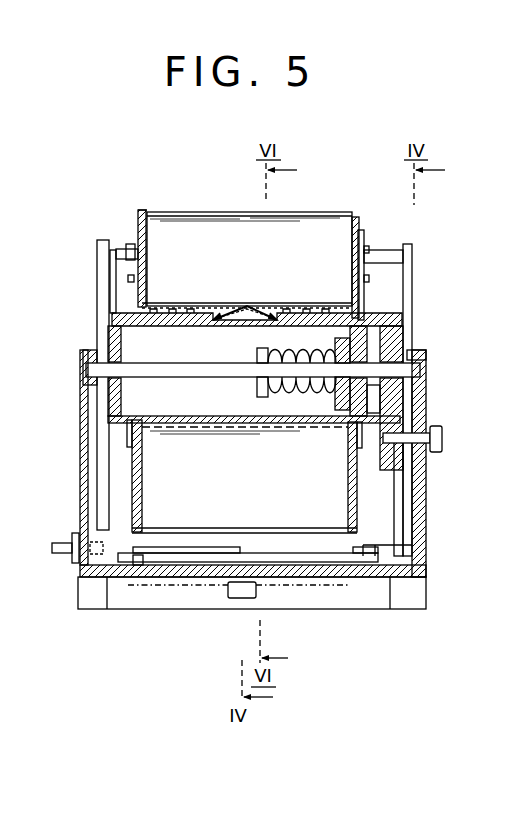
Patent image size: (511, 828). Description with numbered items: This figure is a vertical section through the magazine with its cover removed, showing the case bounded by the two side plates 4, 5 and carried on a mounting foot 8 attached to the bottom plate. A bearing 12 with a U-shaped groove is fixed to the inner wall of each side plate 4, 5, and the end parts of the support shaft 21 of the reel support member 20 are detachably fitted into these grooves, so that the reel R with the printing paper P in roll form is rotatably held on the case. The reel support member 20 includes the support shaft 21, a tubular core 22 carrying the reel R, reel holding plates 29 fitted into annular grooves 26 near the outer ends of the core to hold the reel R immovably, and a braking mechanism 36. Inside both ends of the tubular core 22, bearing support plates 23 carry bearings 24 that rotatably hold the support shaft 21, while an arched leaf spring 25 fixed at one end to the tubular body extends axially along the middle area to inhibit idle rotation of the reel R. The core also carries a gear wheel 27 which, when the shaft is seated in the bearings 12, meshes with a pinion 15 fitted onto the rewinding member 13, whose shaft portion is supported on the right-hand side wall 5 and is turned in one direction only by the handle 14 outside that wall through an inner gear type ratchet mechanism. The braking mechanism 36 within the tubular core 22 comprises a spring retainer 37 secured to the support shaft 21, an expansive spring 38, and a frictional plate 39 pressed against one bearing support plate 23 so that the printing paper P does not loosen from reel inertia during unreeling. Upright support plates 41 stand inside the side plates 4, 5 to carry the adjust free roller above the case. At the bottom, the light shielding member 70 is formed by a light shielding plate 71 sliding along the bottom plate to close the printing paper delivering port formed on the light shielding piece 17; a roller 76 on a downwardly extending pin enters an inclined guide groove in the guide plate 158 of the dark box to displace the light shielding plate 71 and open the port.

The side plate 4 is at (78, 472).
The side plate 5 is at (420, 530).
The mounting foot 8 is at (97, 600).
The bearing 12 is at (90, 350).
The rewinding member 13 is at (420, 440).
The handle 14 is at (443, 440).
The pinion 15 is at (395, 467).
The light shielding piece 17 is at (343, 600).
The reel support member 20 is at (120, 227).
The support shaft 21 is at (197, 370).
The tubular core 22 is at (296, 309).
The bearing support plate 23 is at (119, 335).
The bearing 24 is at (121, 386).
The leaf spring 25 is at (240, 306).
The annular groove 26 is at (170, 311).
The gear wheel 27 is at (408, 425).
The reel holding plate 29 is at (140, 223).
The braking mechanism 36 is at (230, 473).
The spring retainer 37 is at (263, 403).
The expansive spring 38 is at (286, 400).
The frictional plate 39 is at (337, 402).
The support plate 41 is at (98, 263).
The light shielding member 70 is at (298, 595).
The light shielding plate 71 is at (142, 600).
The roller 76 is at (233, 600).
The guide plate 158 is at (180, 600).
The printing paper P is at (213, 217).
The reel R is at (143, 210).